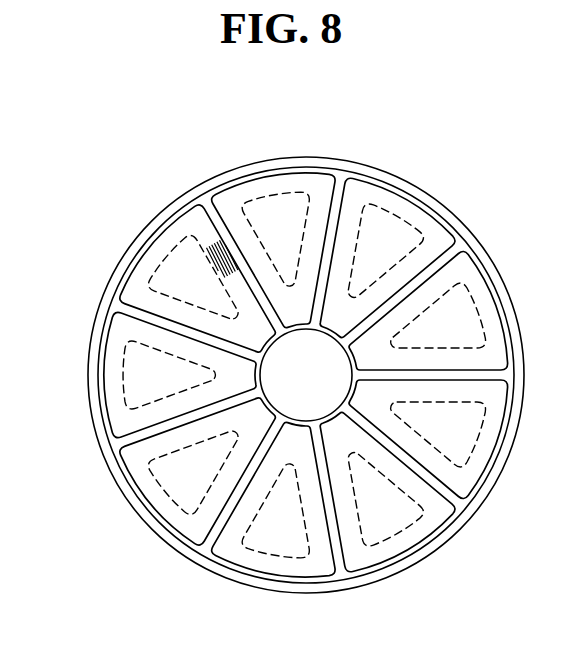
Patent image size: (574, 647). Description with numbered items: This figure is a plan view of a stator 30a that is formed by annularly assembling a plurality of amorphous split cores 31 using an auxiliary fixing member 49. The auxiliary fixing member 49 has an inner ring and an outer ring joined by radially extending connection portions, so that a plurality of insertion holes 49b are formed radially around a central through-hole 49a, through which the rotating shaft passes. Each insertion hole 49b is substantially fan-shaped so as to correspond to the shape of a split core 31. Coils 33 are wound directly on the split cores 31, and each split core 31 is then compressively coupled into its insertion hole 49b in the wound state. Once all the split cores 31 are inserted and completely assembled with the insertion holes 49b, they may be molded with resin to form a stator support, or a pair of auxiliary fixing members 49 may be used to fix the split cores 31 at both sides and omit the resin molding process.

The stator 30a is at (466, 92).
The auxiliary fixing member 49 is at (117, 221).
The insertion hole 49b is at (162, 228).
The through-hole 49a is at (266, 362).
The split core 31 is at (138, 278).
The coil 33 is at (228, 252).